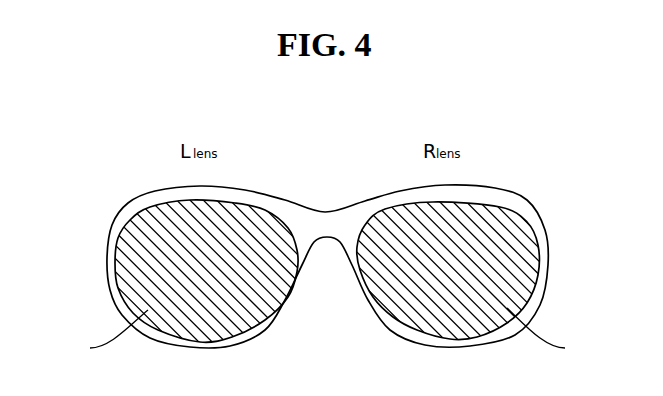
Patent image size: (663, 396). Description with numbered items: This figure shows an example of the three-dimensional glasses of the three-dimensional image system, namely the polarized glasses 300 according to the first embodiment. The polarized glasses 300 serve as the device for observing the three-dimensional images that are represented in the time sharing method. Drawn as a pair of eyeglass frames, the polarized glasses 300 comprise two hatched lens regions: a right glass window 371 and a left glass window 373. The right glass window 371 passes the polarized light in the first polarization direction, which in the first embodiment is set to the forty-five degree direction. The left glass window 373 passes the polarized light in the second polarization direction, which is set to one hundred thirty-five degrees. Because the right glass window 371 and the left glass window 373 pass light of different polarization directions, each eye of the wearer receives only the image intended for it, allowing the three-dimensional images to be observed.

The polarized glasses 300 is at (113, 137).
The right glass window 371 is at (540, 280).
The left glass window 373 is at (115, 282).